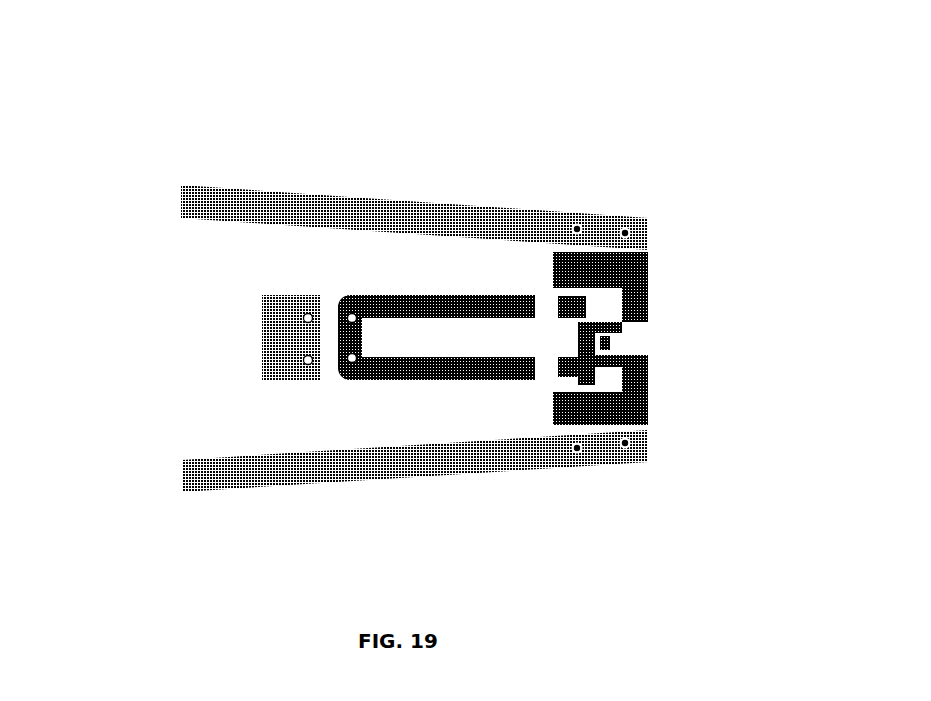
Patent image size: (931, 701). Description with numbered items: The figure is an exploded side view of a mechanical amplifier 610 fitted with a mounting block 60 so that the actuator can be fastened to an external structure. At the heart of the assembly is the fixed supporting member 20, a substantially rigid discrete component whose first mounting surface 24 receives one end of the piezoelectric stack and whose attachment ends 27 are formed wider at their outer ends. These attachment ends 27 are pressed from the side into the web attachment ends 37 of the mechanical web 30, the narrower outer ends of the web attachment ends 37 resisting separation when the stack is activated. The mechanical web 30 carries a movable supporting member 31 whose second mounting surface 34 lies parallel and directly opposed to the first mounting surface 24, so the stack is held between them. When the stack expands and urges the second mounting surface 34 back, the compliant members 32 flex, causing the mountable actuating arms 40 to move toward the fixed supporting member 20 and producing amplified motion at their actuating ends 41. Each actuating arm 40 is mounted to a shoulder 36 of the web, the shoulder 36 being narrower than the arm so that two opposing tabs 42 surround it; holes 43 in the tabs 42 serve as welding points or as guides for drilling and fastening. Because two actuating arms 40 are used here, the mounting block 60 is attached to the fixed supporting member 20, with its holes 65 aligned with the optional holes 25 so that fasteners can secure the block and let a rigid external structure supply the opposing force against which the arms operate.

The mechanical amplifier 610 is at (563, 103).
The mountable actuating arm 40 is at (405, 200).
The actuating end 41 is at (181, 207).
The tab 42 is at (648, 236).
The hole 43 is at (577, 229).
The shoulder 36 is at (652, 276).
The web attachment end 37 is at (558, 300).
The second mounting surface 34 is at (578, 345).
The compliant member 32 is at (610, 325).
The mechanical web 30 is at (612, 356).
The movable supporting member 31 is at (612, 410).
The fixed supporting member 20 is at (352, 382).
The attachment end 27 is at (534, 298).
The first mounting surface 24 is at (357, 318).
The hole 25 is at (350, 363).
The mounting block 60 is at (262, 340).
The hole 65 is at (304, 359).